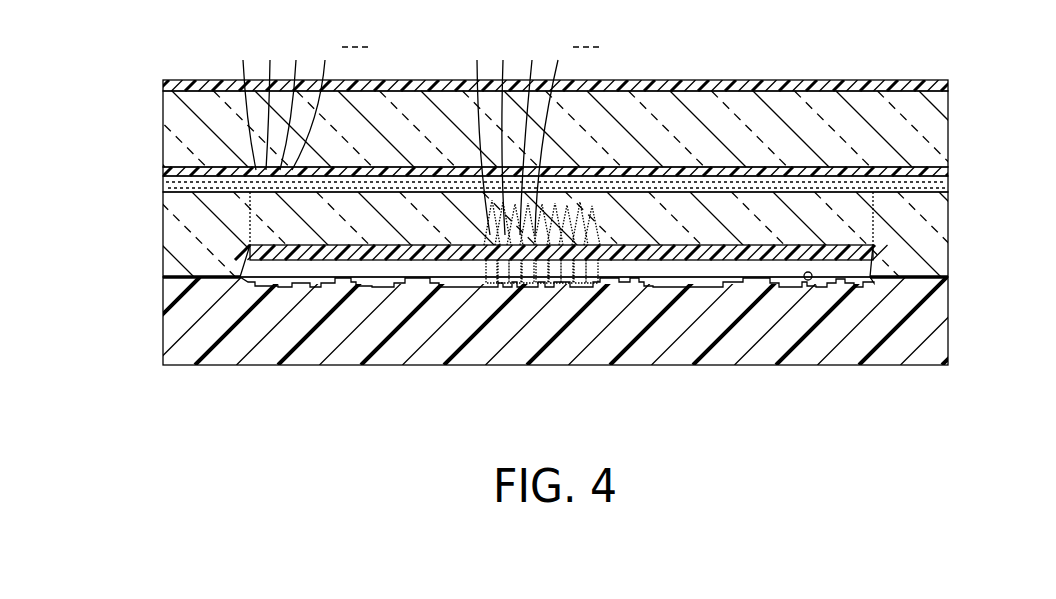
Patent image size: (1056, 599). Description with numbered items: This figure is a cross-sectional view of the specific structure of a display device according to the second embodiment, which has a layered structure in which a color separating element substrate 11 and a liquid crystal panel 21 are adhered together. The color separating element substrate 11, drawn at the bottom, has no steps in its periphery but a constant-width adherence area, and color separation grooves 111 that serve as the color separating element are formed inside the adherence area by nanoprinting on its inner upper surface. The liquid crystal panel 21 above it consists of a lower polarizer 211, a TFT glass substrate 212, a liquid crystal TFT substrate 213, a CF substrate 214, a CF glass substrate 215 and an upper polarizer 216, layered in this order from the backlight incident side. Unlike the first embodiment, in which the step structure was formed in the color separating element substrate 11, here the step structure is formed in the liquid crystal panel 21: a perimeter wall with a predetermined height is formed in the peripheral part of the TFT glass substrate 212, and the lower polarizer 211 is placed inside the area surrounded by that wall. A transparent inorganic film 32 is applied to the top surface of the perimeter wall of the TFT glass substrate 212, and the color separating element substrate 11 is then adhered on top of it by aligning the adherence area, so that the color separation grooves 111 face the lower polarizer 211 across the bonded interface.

The color separating element substrate 11 is at (571, 342).
The color separation groove 111 is at (810, 283).
The liquid crystal panel 21 is at (556, 161).
The lower polarizer 211 is at (728, 282).
The TFT glass substrate 212 is at (170, 233).
The liquid crystal TFT substrate 213 is at (163, 180).
The CF substrate 214 is at (162, 168).
The CF glass substrate 215 is at (163, 118).
The upper polarizer 216 is at (163, 82).
The transparent inorganic film 32 is at (163, 277).